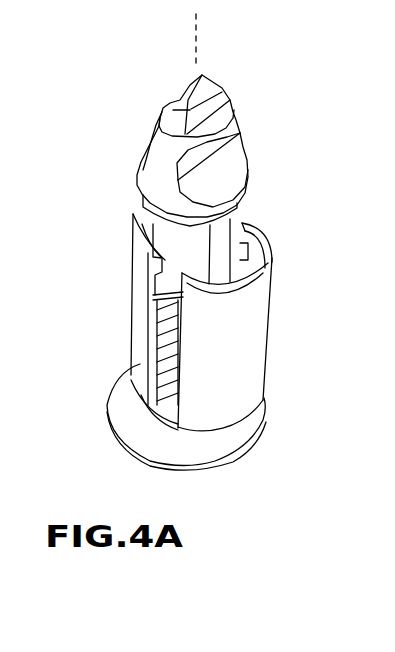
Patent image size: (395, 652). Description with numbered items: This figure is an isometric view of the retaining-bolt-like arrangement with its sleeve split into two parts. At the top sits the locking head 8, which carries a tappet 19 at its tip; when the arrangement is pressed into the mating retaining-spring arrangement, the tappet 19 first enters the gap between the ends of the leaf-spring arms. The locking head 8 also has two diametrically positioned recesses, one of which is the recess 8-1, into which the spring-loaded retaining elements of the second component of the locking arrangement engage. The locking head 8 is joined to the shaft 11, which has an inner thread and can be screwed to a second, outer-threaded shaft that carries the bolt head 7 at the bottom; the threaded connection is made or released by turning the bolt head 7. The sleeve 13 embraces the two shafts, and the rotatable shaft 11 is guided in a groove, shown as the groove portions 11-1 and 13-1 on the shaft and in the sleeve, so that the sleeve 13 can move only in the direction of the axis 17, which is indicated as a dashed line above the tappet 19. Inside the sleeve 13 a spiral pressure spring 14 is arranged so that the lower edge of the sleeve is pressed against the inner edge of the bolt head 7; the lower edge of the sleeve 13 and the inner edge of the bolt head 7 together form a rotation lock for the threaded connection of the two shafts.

The bolt head 7 is at (200, 443).
The locking head 8 is at (140, 190).
The recess 8-1 is at (141, 130).
The shaft 11 is at (170, 233).
The groove 11-1 is at (217, 238).
The sleeve 13 is at (142, 297).
The groove 13-1 is at (239, 272).
The spiral pressure spring 14 is at (162, 353).
The axis 17 is at (175, 34).
The tappet 19 is at (210, 84).